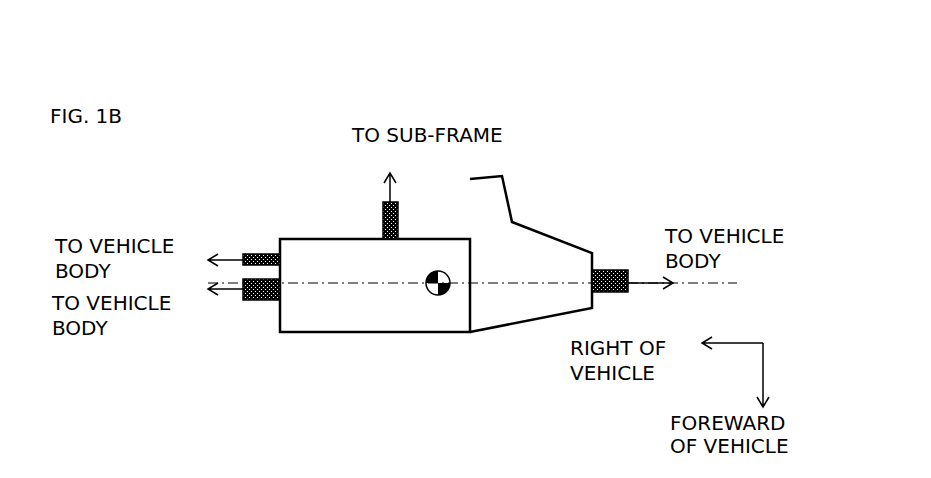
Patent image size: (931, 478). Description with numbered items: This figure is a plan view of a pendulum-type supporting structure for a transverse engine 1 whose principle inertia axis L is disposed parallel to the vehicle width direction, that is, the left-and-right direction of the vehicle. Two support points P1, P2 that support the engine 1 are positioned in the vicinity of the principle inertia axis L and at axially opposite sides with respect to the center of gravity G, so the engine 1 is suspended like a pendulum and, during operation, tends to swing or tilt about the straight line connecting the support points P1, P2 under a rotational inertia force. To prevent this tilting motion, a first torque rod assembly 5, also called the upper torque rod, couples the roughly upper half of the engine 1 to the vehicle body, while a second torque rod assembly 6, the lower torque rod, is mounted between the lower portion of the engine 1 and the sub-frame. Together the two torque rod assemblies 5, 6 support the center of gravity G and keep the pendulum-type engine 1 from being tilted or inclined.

The engine 1 is at (337, 308).
The first torque rod assembly 5 is at (262, 254).
The second torque rod assembly 6 is at (383, 222).
The support point P1 is at (258, 300).
The support point P2 is at (607, 270).
The center of gravity G is at (438, 297).
The principle inertia axis L is at (715, 283).